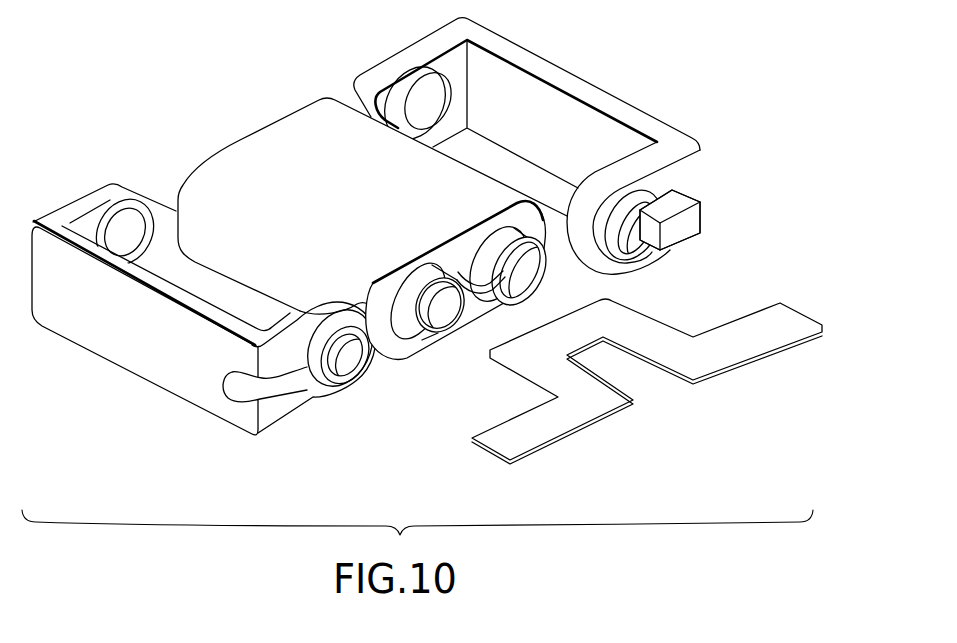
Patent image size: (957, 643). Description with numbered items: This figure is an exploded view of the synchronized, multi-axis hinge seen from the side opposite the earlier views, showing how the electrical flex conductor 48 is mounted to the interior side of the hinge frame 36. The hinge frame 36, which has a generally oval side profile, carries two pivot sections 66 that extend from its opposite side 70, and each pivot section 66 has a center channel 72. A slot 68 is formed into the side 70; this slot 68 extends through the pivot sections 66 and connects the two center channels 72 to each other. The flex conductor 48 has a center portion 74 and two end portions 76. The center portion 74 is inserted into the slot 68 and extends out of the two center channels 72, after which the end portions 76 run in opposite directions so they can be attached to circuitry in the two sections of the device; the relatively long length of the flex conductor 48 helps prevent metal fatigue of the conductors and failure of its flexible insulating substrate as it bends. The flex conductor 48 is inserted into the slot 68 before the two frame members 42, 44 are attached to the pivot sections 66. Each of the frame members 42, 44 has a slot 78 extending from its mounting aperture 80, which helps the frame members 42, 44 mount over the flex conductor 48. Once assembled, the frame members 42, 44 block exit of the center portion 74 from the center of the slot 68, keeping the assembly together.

The hinge frame 36 is at (258, 132).
The frame member 42 is at (389, 260).
The frame member 44 is at (558, 76).
The electrical flex conductor 48 is at (647, 397).
The pivot section 66 is at (523, 294).
The slot 68 is at (467, 291).
The opposite side 70 is at (400, 353).
The center channel 72 is at (437, 320).
The center portion 74 is at (587, 346).
The end portion 76 is at (763, 345).
The slot 78 is at (252, 398).
The mounting aperture 80 is at (333, 363).